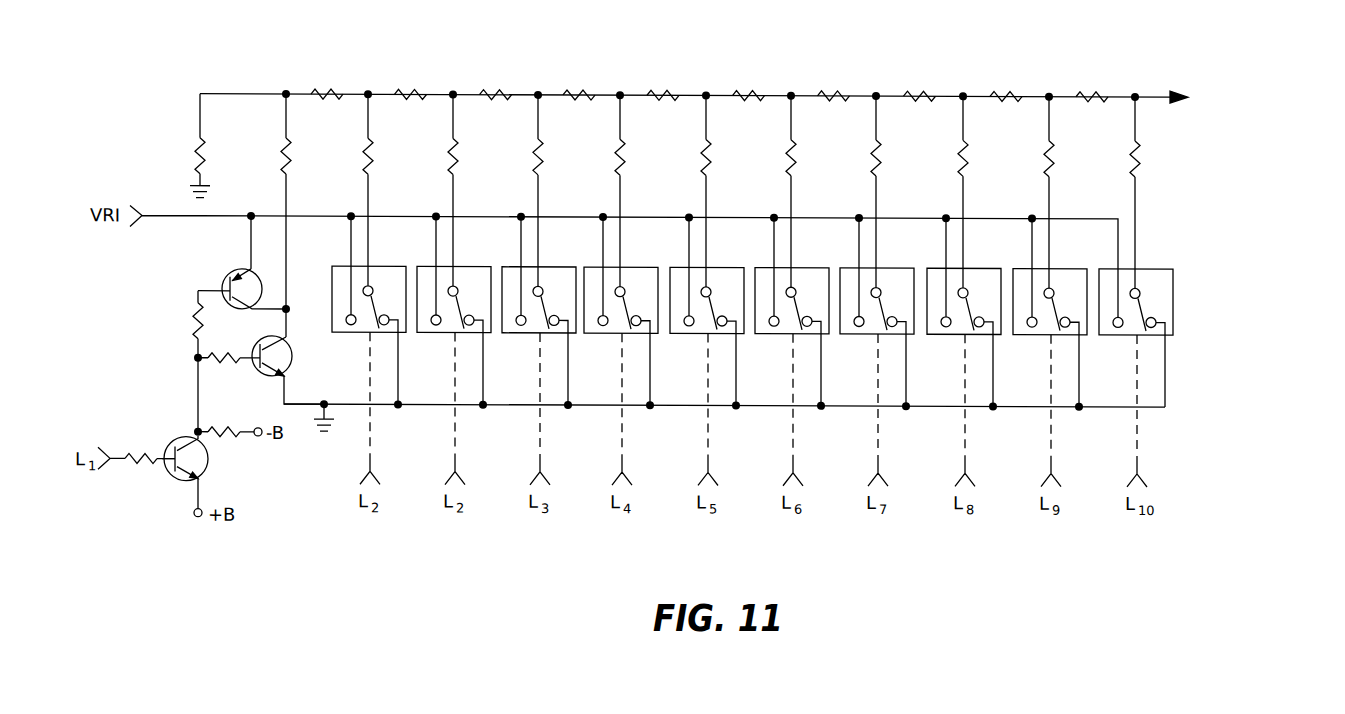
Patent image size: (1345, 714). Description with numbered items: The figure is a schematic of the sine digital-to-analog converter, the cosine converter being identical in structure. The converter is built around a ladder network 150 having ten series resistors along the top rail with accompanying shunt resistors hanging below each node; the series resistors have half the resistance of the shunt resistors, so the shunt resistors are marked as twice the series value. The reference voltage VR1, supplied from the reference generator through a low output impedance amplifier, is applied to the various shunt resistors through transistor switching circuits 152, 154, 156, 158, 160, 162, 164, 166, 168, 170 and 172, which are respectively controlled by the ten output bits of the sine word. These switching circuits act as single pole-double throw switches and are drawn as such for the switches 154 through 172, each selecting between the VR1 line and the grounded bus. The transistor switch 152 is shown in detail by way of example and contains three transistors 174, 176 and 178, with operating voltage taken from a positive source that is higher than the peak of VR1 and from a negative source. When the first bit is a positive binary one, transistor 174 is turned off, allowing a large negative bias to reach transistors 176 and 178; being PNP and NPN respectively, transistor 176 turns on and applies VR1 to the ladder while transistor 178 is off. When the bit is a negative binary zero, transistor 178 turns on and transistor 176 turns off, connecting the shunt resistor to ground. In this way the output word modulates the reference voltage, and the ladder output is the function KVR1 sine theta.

The ladder network 150 is at (688, 55).
The transistor switch 152 is at (217, 337).
The transistor switching circuit 154 is at (396, 265).
The transistor switching circuit 156 is at (481, 265).
The transistor switching circuit 158 is at (566, 265).
The transistor switching circuit 160 is at (648, 265).
The transistor switching circuit 162 is at (734, 265).
The transistor switching circuit 164 is at (819, 265).
The transistor switching circuit 166 is at (904, 265).
The transistor switching circuit 168 is at (991, 265).
The transistor switching circuit 170 is at (1077, 265).
The transistor switching circuit 172 is at (1163, 265).
The transistor 174 is at (204, 470).
The transistor 176 is at (221, 283).
The transistor 178 is at (293, 356).